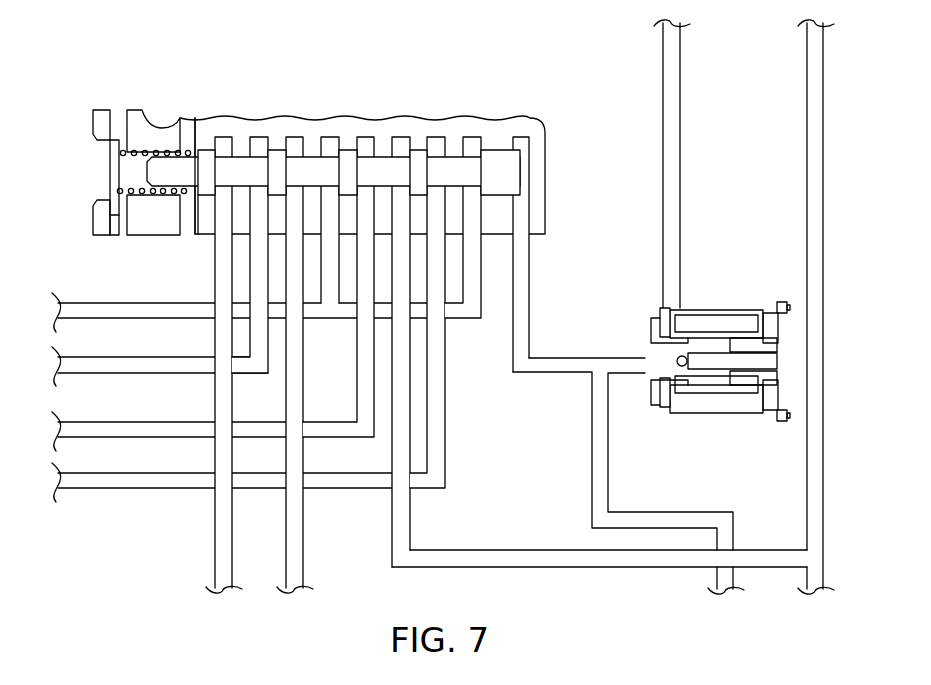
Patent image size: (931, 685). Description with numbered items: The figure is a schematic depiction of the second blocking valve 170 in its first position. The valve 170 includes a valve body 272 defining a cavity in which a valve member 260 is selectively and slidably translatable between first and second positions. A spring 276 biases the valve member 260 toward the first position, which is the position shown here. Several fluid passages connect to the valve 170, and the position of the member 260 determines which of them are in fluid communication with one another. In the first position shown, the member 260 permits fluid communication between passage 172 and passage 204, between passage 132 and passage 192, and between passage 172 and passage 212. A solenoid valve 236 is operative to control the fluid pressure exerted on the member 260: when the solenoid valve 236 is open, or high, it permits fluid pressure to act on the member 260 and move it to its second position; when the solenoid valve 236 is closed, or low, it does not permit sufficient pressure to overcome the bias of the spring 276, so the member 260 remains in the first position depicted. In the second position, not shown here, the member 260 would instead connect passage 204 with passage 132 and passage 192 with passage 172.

The valve 170 is at (520, 123).
The valve body 272 is at (433, 123).
The valve member 260 is at (243, 167).
The spring 276 is at (138, 195).
The passage 172 is at (337, 318).
The passage 192 is at (316, 422).
The passage 212 is at (303, 523).
The passage 204 is at (445, 425).
The passage 132 is at (410, 522).
The solenoid valve 236 is at (732, 306).